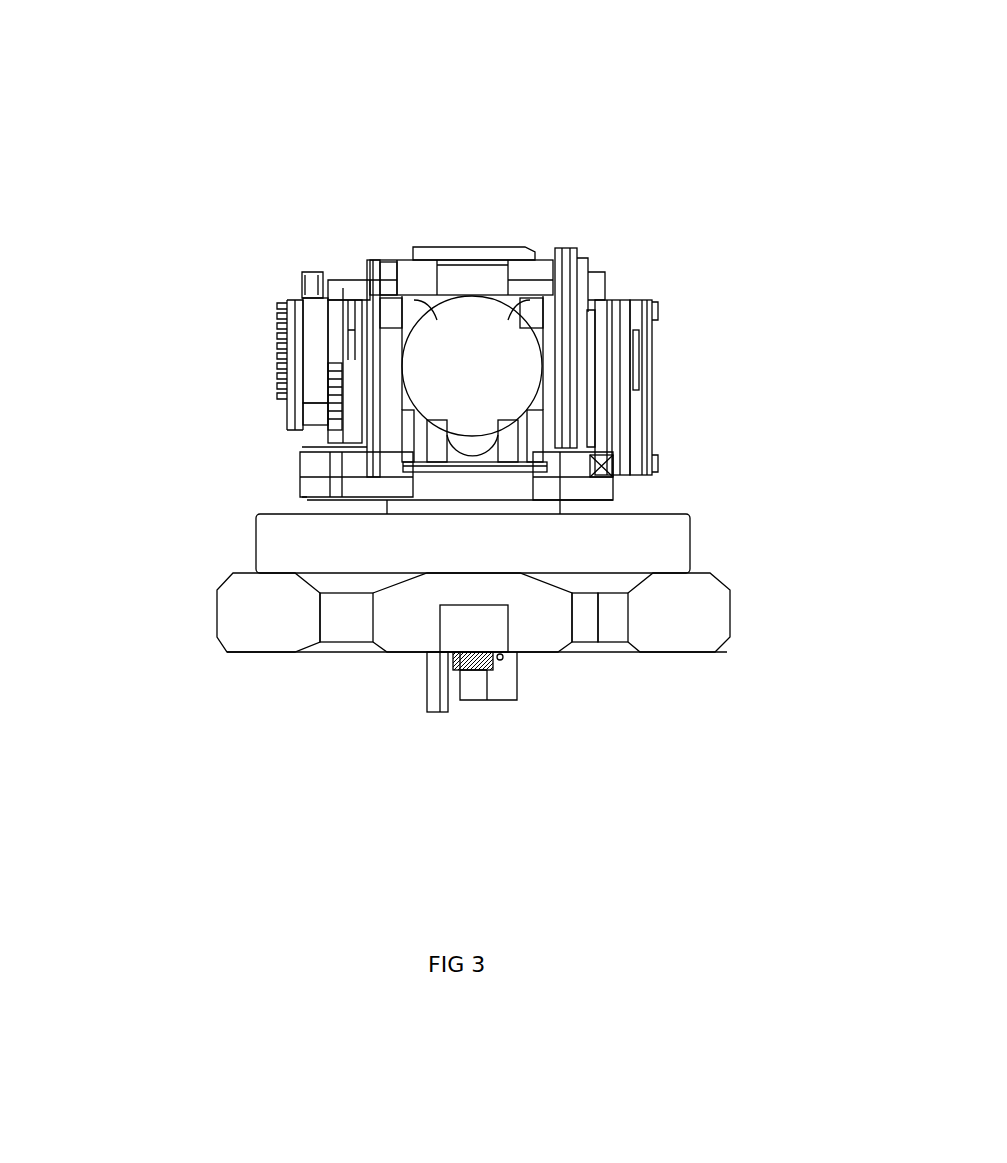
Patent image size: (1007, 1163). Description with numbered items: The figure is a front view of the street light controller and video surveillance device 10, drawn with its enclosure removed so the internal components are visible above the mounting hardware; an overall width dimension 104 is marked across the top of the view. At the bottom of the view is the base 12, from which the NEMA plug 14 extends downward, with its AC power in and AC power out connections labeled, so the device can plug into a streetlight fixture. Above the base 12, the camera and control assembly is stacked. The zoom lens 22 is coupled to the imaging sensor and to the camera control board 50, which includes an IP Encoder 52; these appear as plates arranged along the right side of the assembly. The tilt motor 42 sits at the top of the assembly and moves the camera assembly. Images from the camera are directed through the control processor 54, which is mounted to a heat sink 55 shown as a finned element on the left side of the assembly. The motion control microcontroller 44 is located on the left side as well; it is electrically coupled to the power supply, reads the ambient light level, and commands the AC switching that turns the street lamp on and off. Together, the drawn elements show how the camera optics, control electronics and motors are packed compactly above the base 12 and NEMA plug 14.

The width dimension 104 is at (709, 43).
The street light controller and video surveillance device 10 is at (255, 510).
The base 12 is at (208, 630).
The NEMA plug 14 is at (418, 695).
The tilt motor 42 is at (490, 240).
The heat sink 55 is at (345, 273).
The control processor 54 is at (370, 357).
The motion control microcontroller 44 is at (280, 385).
The camera control board 50 is at (608, 365).
The IP Encoder 52 is at (650, 395).
The zoom lens 22 is at (612, 483).